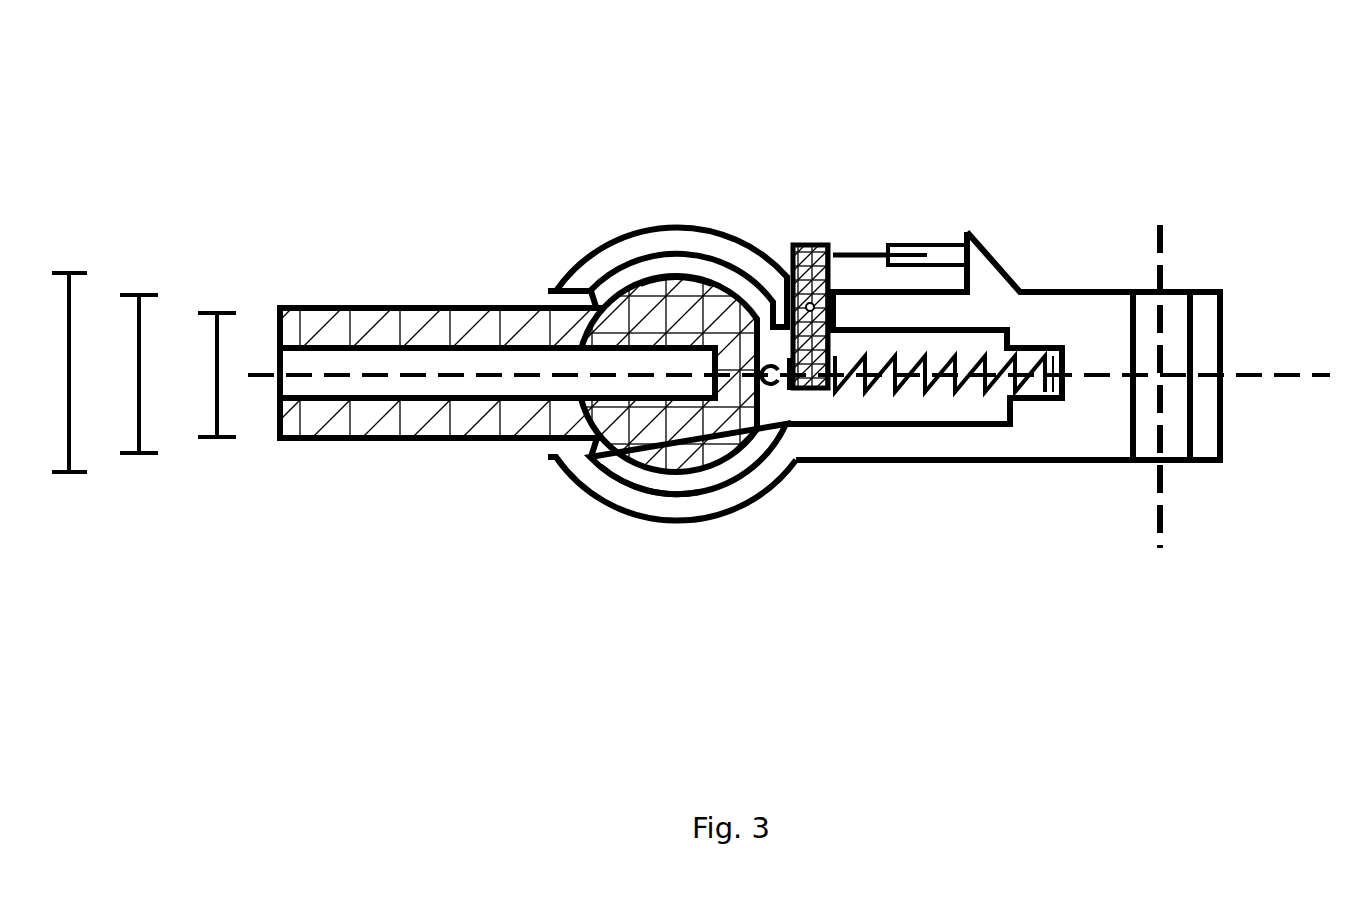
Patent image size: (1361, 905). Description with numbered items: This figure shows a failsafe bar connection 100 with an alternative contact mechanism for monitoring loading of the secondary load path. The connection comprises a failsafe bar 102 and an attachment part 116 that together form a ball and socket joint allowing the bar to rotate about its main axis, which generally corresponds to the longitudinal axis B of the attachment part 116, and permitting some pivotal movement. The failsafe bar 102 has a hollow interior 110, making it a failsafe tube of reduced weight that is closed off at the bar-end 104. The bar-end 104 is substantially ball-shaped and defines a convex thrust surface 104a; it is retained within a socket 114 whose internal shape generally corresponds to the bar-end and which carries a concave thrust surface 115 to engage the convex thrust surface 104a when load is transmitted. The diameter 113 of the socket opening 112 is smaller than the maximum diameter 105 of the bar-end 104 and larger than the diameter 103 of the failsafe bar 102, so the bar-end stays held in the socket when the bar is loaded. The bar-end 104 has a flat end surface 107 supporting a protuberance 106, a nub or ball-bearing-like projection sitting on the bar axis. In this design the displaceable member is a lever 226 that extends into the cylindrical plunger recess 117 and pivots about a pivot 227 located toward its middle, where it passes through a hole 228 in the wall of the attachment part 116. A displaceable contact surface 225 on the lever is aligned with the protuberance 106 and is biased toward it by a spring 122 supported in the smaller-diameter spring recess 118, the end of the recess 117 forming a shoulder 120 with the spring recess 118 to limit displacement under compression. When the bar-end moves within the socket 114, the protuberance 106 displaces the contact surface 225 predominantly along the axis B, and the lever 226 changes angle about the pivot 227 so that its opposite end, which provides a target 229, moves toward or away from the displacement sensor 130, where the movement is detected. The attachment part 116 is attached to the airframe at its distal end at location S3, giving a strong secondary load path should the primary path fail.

The failsafe bar connection 100 is at (228, 80).
The failsafe bar 102 is at (362, 420).
The diameter of the failsafe bar 103 is at (220, 353).
The bar-end 104 is at (678, 442).
The convex thrust surface 104a is at (675, 278).
The maximum diameter of the bar-end 105 is at (67, 353).
The protuberance 106 is at (773, 300).
The flat end surface 107 is at (779, 422).
The hollow interior 110 is at (386, 360).
The socket opening 112 is at (572, 460).
The diameter of the socket opening 113 is at (139, 354).
The socket 114 is at (635, 482).
The concave thrust surface 115 is at (607, 277).
The attachment part 116 is at (995, 265).
The cylindrical plunger recess 117 is at (972, 407).
The spring recess 118 is at (1058, 400).
The shoulder 120 is at (990, 405).
The spring 122 is at (1042, 396).
The displacement sensor 130 is at (912, 245).
The displaceable contact surface 225 is at (787, 440).
The lever 226 is at (812, 262).
The pivot 227 is at (805, 365).
The hole 228 is at (845, 337).
The target 229 is at (836, 250).
The location S3 is at (1158, 367).
The longitudinal axis B is at (803, 377).